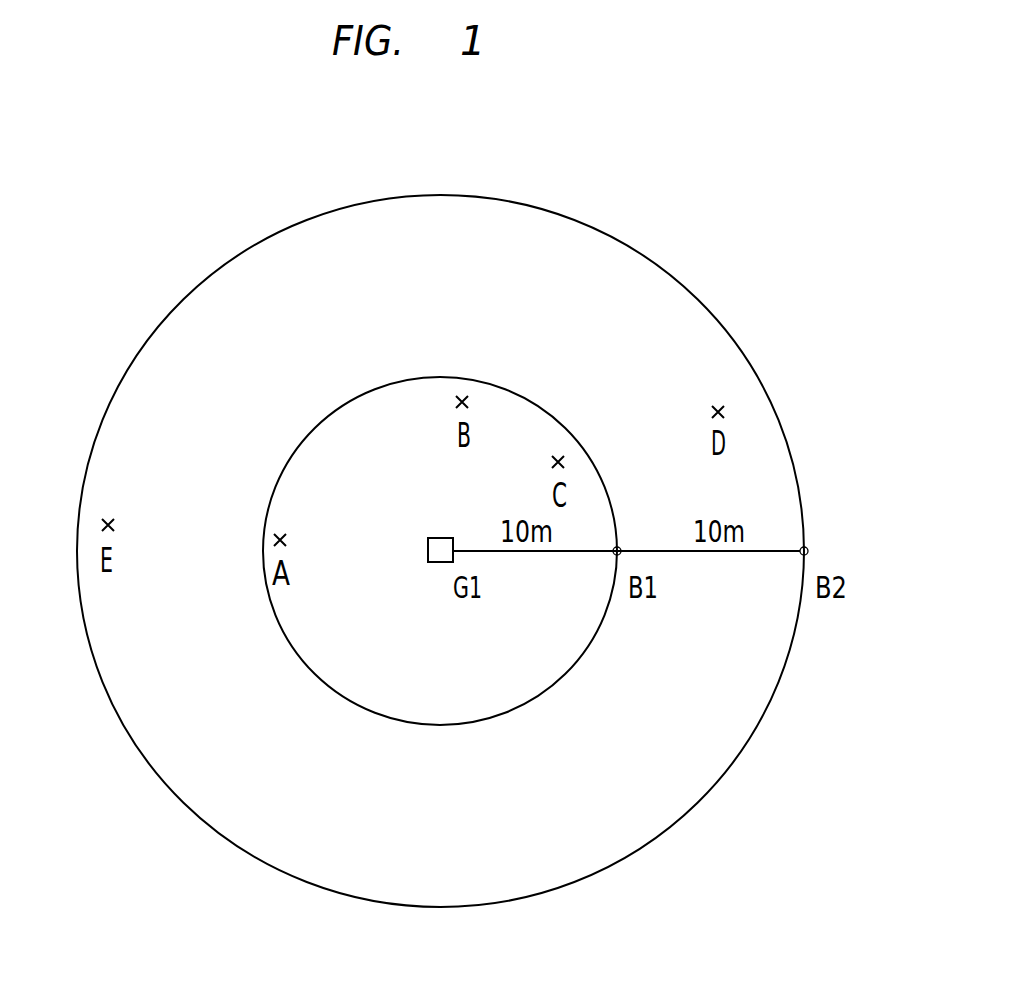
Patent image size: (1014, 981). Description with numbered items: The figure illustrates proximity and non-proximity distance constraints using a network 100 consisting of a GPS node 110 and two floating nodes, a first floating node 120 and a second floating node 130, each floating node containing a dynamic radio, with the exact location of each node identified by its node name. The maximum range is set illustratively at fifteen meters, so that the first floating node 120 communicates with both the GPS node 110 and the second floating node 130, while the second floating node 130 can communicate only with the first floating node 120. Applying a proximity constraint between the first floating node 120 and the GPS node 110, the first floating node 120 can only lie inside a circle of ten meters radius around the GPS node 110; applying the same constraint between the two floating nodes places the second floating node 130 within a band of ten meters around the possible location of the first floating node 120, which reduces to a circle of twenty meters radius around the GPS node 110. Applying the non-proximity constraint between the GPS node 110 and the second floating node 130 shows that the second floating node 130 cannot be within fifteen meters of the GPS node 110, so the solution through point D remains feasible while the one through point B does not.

The network 100 is at (823, 265).
The GPS node G1 110 is at (426, 559).
The floating node B1 120 is at (608, 559).
The floating node B2 130 is at (792, 559).